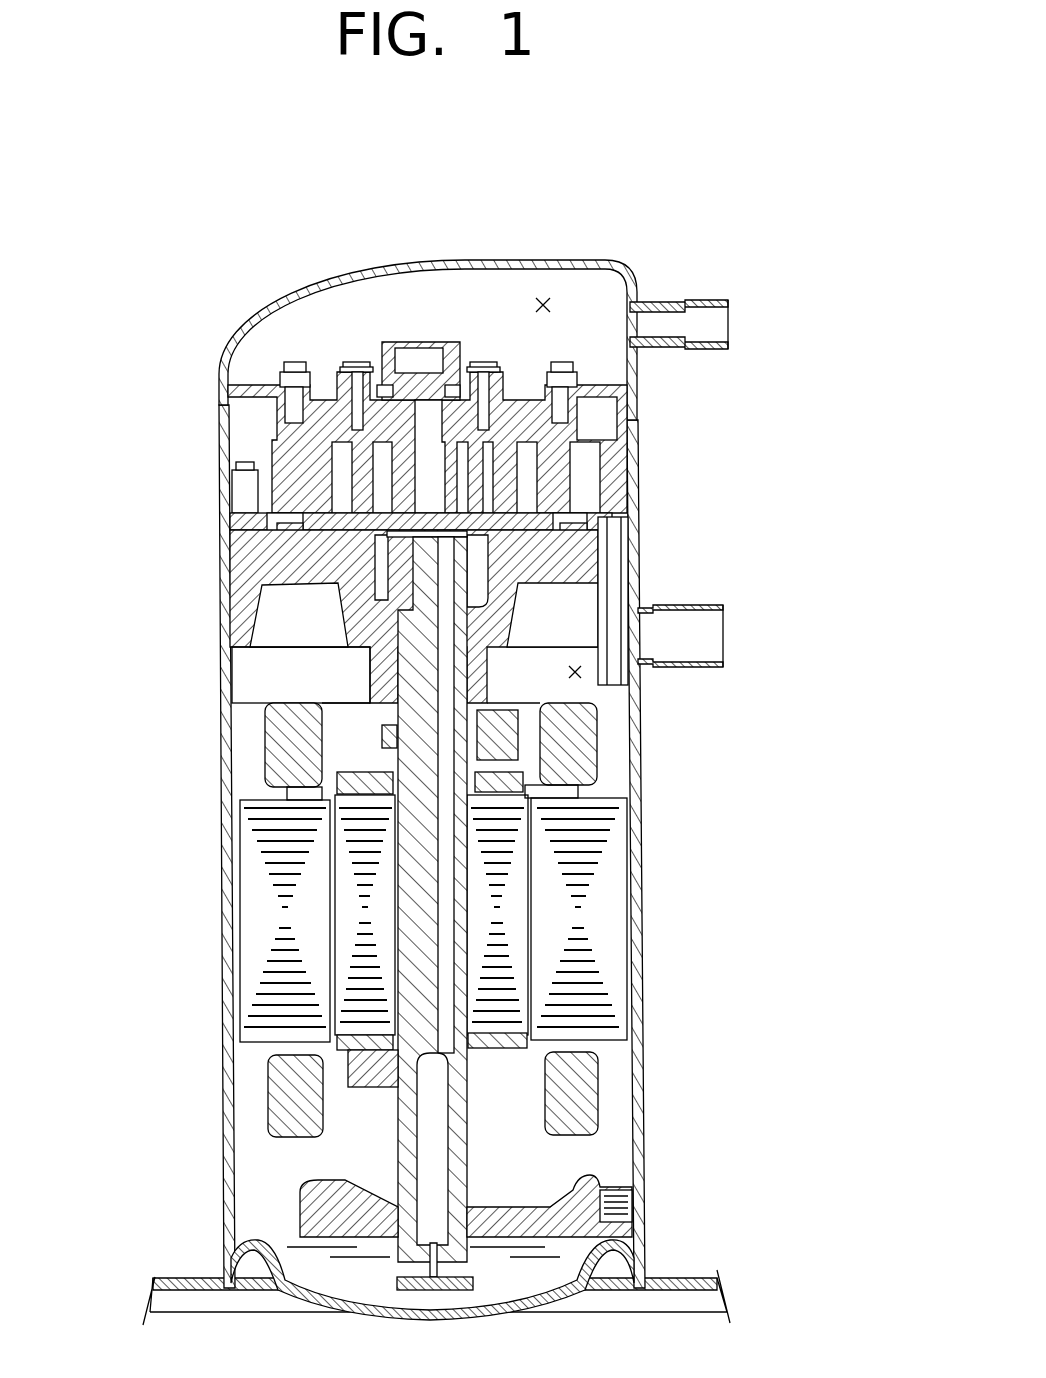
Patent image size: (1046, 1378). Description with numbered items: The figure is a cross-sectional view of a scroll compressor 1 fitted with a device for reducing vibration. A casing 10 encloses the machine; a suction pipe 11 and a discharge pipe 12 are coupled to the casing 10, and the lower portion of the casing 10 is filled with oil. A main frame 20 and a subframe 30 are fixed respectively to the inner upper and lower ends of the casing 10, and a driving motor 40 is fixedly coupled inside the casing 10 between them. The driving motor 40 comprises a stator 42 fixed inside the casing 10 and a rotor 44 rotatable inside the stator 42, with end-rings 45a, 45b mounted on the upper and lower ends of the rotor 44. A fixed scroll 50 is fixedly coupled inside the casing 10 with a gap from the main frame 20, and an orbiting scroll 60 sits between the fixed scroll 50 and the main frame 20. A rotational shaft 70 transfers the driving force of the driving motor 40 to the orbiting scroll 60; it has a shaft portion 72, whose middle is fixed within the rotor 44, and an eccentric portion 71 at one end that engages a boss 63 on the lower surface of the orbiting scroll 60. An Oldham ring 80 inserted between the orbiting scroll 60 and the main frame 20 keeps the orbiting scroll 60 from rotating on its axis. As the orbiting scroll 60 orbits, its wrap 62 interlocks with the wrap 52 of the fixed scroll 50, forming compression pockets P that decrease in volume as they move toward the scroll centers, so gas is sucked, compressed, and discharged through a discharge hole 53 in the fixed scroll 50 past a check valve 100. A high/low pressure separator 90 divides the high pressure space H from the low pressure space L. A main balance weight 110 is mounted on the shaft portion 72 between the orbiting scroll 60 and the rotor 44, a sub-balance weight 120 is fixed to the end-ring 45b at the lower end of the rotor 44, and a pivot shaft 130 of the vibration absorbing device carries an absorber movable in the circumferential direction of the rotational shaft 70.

The scroll compressor 1 is at (183, 245).
The casing 10 is at (645, 830).
The suction pipe 11 is at (705, 630).
The discharge pipe 12 is at (672, 300).
The main frame 20 is at (290, 655).
The subframe 30 is at (598, 1170).
The driving motor 40 is at (120, 938).
The stator 42 is at (255, 906).
The rotor 44 is at (355, 855).
The end-ring 45a is at (340, 785).
The end-ring 45b is at (345, 1048).
The fixed scroll 50 is at (272, 447).
The wrap 52 is at (410, 467).
The discharge hole 53 is at (440, 367).
The orbiting scroll 60 is at (335, 545).
The wrap 62 is at (525, 493).
The boss 63 is at (612, 565).
The rotational shaft 70 is at (470, 912).
The eccentric portion 71 is at (380, 580).
The shaft portion 72 is at (420, 972).
The Oldham ring 80 is at (300, 545).
The high/low pressure separator 90 is at (253, 385).
The check valve 100 is at (460, 340).
The main balance weight 110 is at (522, 722).
The sub-balance weight 120 is at (340, 1080).
The pivot shaft 130 is at (382, 1093).
The high pressure space H is at (543, 297).
The low pressure space L is at (583, 672).
The compression pockets P is at (395, 497).